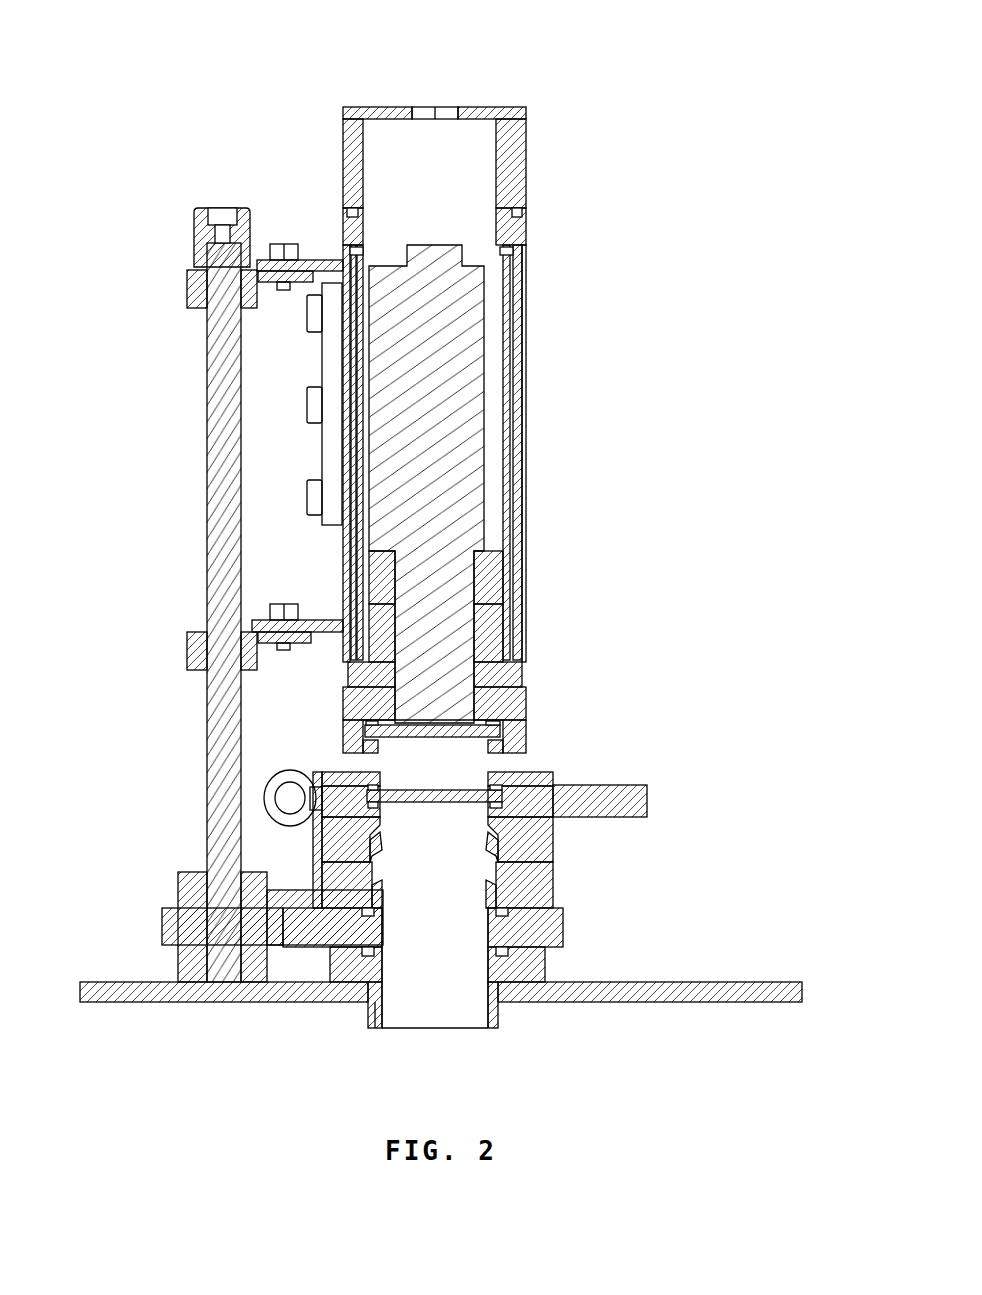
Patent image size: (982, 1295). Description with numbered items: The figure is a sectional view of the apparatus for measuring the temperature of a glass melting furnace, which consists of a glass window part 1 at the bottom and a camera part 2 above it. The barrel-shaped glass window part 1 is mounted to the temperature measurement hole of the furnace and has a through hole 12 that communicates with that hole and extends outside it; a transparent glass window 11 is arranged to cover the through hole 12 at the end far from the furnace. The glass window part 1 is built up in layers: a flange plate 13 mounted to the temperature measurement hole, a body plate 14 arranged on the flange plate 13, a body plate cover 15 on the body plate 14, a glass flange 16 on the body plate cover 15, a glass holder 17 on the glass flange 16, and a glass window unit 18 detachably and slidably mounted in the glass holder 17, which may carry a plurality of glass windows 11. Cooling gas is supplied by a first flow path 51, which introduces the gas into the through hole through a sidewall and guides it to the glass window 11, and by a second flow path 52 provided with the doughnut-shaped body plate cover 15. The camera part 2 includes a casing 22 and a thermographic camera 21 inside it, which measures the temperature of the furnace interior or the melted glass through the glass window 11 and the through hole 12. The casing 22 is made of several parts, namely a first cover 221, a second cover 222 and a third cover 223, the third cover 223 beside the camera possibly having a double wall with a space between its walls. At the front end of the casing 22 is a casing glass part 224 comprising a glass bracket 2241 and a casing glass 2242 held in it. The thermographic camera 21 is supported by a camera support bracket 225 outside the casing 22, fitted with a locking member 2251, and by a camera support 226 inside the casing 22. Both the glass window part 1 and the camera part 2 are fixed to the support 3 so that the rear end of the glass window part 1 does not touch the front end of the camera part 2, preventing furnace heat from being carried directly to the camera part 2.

The glass window part 1 is at (686, 890).
The glass window 11 is at (437, 790).
The through hole 12 is at (457, 975).
The flange plate 13 is at (690, 1002).
The body plate 14 is at (553, 935).
The body plate cover 15 is at (548, 883).
The glass flange 16 is at (548, 838).
The glass holder 17 is at (553, 778).
The glass window unit 18 is at (647, 800).
The camera part 2 is at (645, 460).
The thermographic camera 21 is at (437, 245).
The casing 22 is at (548, 170).
The first cover 221 is at (500, 106).
The second cover 222 is at (518, 233).
The third cover 223 is at (527, 378).
The casing glass part 224 is at (612, 634).
The glass bracket 2241 is at (522, 732).
The casing glass 2242 is at (527, 698).
The camera support bracket 225 is at (330, 365).
The locking member 2251 is at (310, 320).
The camera support 226 is at (366, 258).
The support 3 is at (192, 460).
The first flow path 51 is at (495, 832).
The second flow path 52 is at (492, 896).